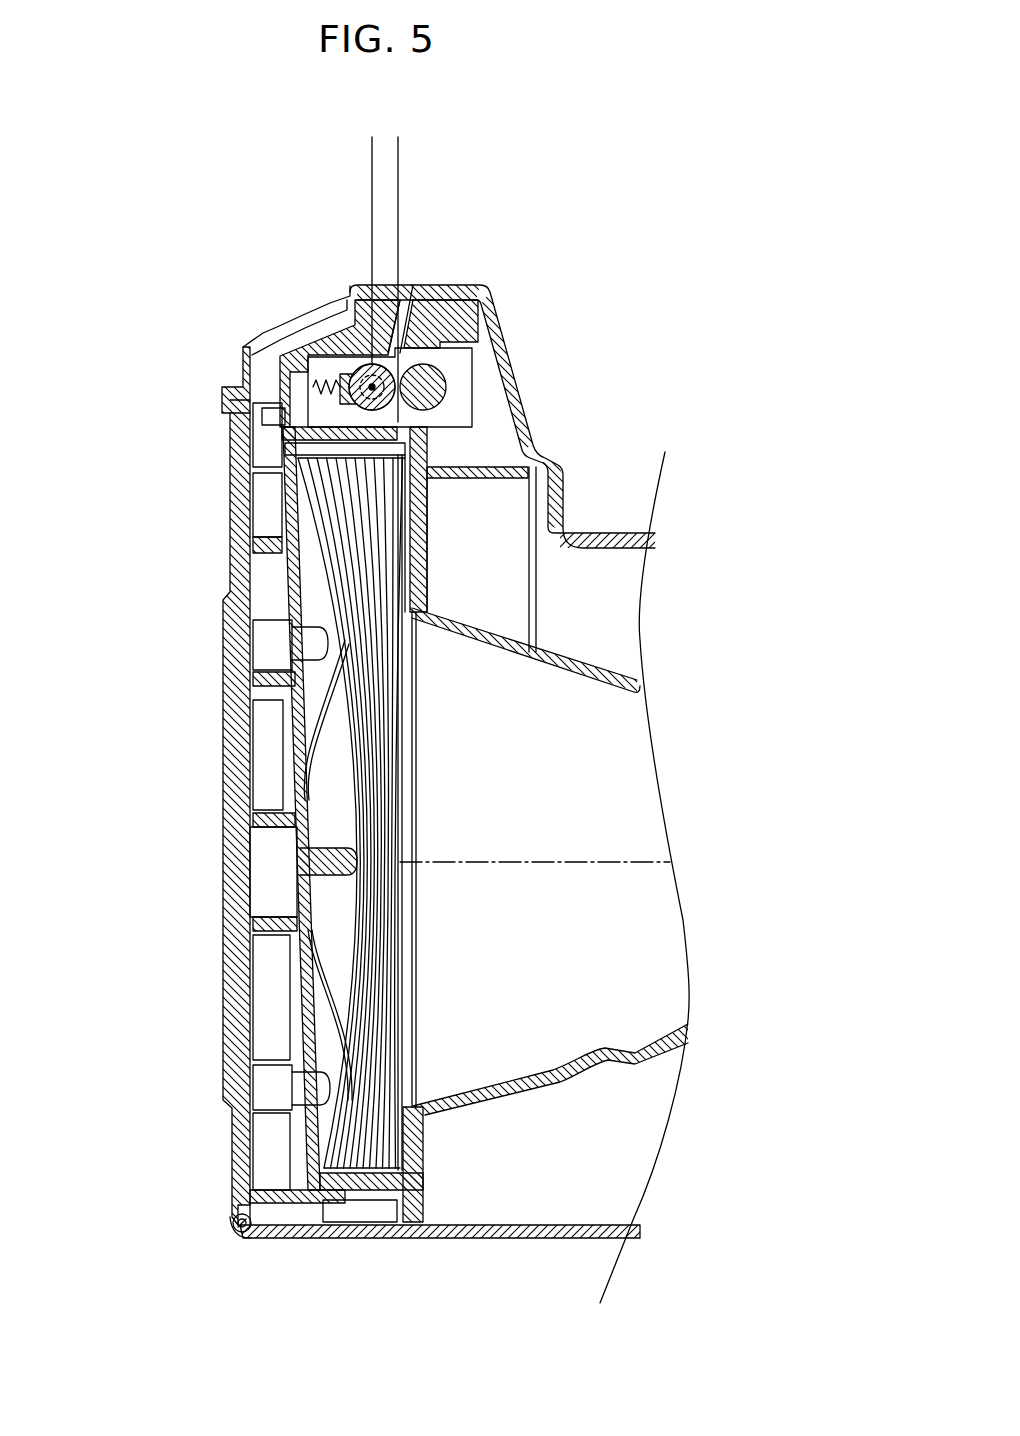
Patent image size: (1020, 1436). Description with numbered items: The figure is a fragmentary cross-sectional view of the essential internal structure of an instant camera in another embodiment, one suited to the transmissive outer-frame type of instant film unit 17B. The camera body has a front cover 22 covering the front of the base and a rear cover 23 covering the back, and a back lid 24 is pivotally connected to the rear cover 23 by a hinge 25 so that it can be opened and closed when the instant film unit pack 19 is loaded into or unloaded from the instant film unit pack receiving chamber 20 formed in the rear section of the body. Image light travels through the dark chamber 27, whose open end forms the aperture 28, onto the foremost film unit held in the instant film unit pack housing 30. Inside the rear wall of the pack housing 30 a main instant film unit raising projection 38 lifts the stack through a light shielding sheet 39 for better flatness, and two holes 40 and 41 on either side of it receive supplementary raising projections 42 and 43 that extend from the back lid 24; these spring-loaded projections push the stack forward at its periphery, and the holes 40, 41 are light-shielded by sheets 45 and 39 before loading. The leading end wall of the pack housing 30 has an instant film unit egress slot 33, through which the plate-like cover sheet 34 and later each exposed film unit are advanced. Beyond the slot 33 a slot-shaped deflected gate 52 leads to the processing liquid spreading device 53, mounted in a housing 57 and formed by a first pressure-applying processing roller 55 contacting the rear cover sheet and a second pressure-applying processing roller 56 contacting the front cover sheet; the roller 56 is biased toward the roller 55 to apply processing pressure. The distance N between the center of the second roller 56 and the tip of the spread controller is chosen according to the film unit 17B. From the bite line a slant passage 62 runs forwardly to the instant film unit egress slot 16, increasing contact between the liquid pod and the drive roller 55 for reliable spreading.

The distance between the center of the second processing roller and the tip of the s N is at (325, 148).
The instant film unit egress slot 16 is at (417, 287).
The transmissive outer-frame type of instant film unit 17B is at (345, 790).
The instant film unit pack 19 is at (287, 765).
The instant film unit pack receiving chamber 20 is at (270, 982).
The front cover 22 is at (586, 530).
The rear cover 23 is at (272, 335).
The back lid 24 is at (220, 513).
The hinge 25 is at (236, 1238).
The dark chamber 27 is at (593, 673).
The aperture 28 is at (412, 612).
The instant film unit pack housing 30 is at (294, 846).
The instant film unit egress slot 33 is at (383, 462).
The plate-like cover sheet 34 is at (398, 795).
The main instant film unit raising projection 38 is at (345, 872).
The light shielding sheet 39 is at (340, 1003).
The hole 40 is at (287, 617).
The hole 41 is at (313, 1115).
The supplementary instant film unit raising projection 42 is at (270, 643).
The supplementary instant film unit raising projection 43 is at (270, 1090).
The light shielding sheet 45 is at (333, 702).
The slot-shaped deflected gate 52 is at (405, 462).
The processing liquid spreading device 53 is at (605, 308).
The first pressure-applying processing roller 55 is at (425, 400).
The second pressure-applying processing roller 56 is at (433, 365).
The housing 57 is at (330, 324).
The slant passage 62 is at (440, 322).